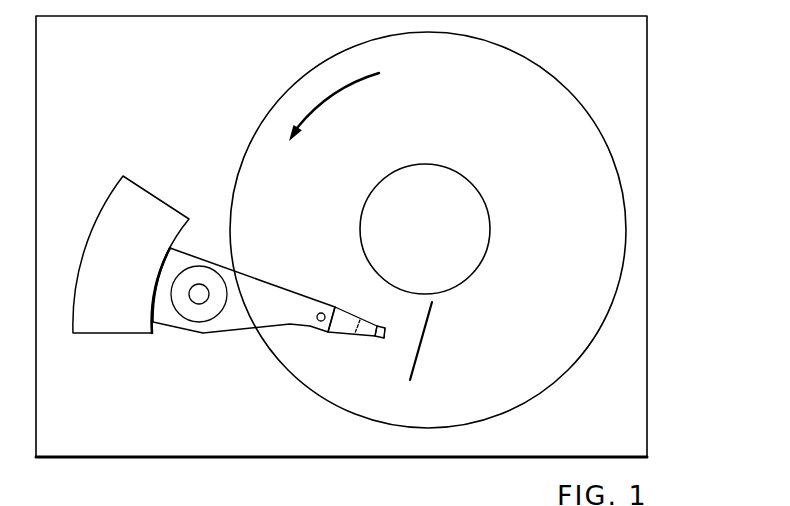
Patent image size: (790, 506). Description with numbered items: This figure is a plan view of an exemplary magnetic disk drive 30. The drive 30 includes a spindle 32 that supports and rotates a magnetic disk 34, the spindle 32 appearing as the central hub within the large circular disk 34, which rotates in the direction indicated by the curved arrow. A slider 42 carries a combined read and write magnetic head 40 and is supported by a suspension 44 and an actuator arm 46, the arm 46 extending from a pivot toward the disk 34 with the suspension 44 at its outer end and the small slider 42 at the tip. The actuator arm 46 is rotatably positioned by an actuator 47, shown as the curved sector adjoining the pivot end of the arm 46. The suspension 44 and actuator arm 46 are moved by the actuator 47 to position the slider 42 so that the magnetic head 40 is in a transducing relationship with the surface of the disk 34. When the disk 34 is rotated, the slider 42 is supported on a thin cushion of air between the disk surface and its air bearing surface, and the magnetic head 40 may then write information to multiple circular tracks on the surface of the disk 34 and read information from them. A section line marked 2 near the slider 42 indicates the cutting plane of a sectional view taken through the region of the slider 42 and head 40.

The magnetic disk drive 30 is at (670, 51).
The spindle 32 is at (463, 172).
The magnetic disk 34 is at (569, 250).
The magnetic head 40 is at (385, 337).
The slider 42 is at (385, 322).
The suspension 44 is at (343, 336).
The actuator arm 46 is at (285, 295).
The actuator 47 is at (163, 207).
The section line for FIG. 2 is at (445, 311).